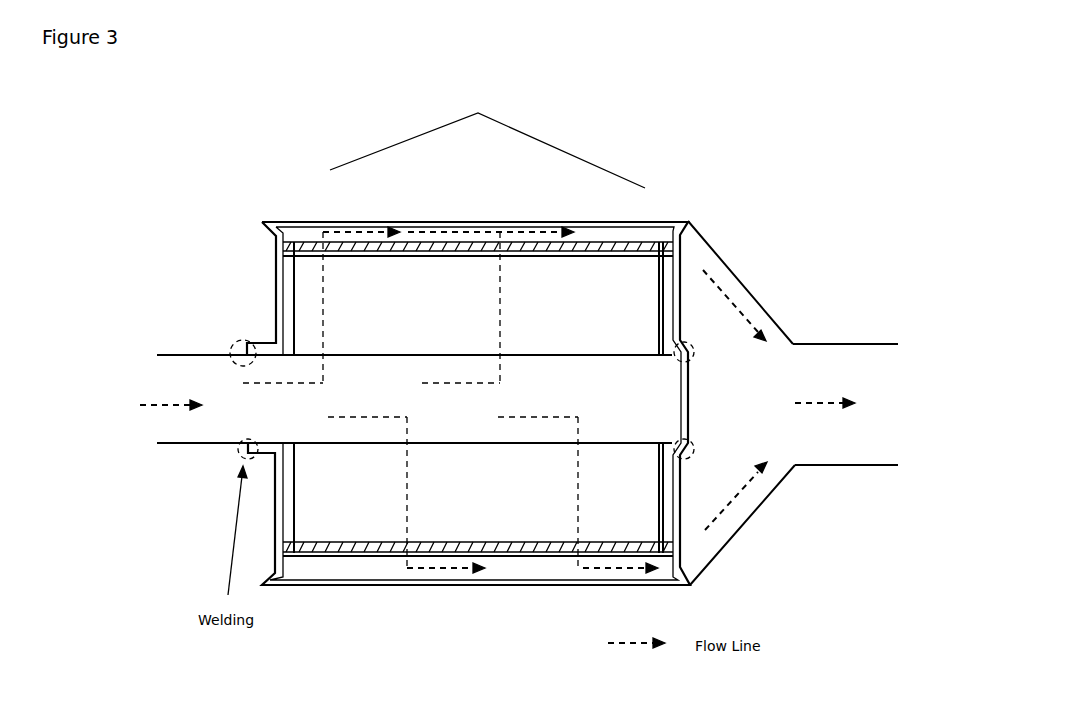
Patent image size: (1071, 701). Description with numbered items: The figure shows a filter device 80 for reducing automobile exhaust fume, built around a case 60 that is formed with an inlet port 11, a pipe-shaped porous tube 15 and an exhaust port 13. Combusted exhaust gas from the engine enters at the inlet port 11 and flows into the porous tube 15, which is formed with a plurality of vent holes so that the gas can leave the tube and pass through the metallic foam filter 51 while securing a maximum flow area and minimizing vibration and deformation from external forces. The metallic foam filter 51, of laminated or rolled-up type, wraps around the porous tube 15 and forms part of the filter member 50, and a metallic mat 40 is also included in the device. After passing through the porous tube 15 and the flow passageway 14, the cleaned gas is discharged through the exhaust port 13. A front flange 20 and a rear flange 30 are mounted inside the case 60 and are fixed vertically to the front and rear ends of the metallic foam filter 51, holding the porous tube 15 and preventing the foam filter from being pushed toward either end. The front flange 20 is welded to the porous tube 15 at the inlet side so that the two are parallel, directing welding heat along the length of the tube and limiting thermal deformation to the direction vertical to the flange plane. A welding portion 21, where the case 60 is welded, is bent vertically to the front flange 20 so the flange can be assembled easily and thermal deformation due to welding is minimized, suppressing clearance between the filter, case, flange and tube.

The inlet port 11 is at (160, 423).
The exhaust port 13 is at (812, 410).
The flow passageway 14 is at (548, 222).
The porous tube 15 is at (186, 344).
The front flange 20 is at (268, 274).
The welding portion 21 is at (240, 342).
The rear flange 30 is at (687, 256).
The metallic mat 40 is at (452, 245).
The filter member 50 is at (675, 221).
The metallic foam filter 51 is at (595, 293).
The case 60 is at (403, 585).
The filter device 80 is at (540, 180).